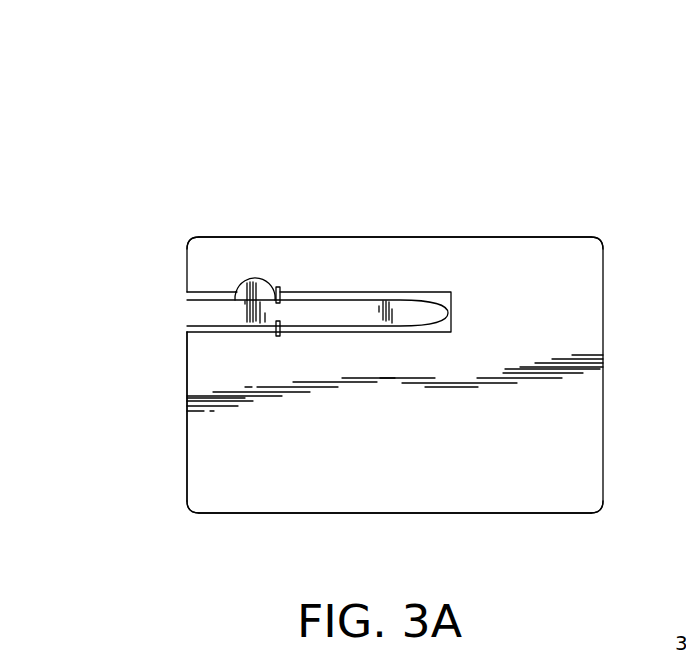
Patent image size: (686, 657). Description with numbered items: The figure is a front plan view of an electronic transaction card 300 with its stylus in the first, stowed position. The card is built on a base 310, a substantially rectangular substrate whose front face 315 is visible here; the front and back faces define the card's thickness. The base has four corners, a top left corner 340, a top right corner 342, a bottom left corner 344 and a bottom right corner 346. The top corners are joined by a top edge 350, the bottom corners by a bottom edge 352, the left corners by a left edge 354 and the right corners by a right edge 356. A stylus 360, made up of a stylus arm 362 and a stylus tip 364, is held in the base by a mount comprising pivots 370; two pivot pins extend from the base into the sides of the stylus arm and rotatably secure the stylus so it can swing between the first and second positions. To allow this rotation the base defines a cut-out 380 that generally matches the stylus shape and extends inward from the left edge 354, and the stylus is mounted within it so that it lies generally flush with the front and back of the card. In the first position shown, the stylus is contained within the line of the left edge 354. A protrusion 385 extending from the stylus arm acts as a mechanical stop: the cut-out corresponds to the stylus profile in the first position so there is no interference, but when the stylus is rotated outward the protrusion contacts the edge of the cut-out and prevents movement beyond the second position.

The electronic transaction card 300 is at (455, 102).
The base 310 is at (370, 436).
The front face 315 is at (548, 305).
The top left corner 340 is at (188, 242).
The top right corner 342 is at (602, 248).
The bottom left corner 344 is at (187, 508).
The bottom right corner 346 is at (599, 514).
The top edge 350 is at (502, 238).
The bottom edge 352 is at (495, 515).
The left edge 354 is at (187, 445).
The right edge 356 is at (604, 387).
The stylus 360 is at (318, 308).
The stylus arm 362 is at (352, 308).
The stylus tip 364 is at (425, 310).
The pivots 370 is at (288, 285).
The cut-out 380 is at (368, 332).
The protrusion 385 is at (237, 290).